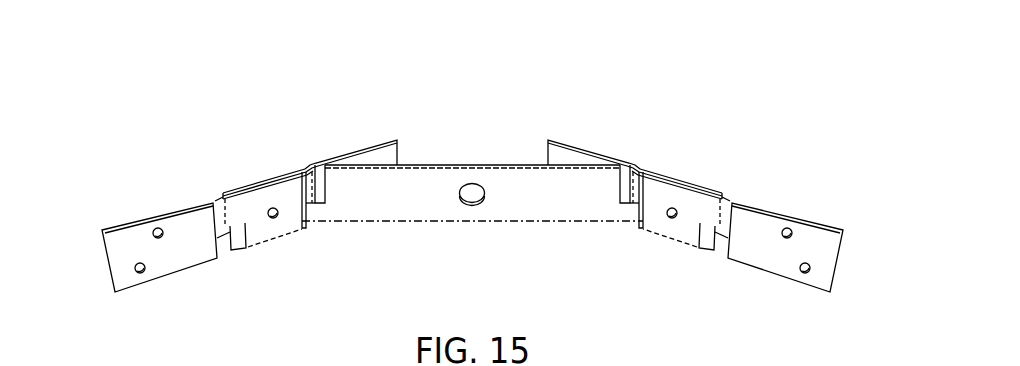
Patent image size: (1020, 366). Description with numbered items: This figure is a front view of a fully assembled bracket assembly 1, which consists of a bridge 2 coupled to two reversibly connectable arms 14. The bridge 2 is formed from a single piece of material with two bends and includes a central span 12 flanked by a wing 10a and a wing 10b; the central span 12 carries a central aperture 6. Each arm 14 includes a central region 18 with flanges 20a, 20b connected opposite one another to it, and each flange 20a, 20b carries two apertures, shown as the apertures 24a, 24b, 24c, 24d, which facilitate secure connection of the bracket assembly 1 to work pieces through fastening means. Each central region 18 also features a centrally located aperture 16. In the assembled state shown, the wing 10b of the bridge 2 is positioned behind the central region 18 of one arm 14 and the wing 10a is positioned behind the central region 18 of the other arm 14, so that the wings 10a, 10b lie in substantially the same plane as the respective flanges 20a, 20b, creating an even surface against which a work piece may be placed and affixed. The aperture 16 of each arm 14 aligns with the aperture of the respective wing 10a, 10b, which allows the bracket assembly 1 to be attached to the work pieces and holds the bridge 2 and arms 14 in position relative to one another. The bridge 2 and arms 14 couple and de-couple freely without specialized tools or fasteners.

The bracket assembly 1 is at (518, 50).
The bridge 2 is at (472, 197).
The central aperture 6 is at (473, 195).
The wing 10a is at (703, 182).
The wing 10b is at (245, 183).
The central span 12 is at (392, 213).
The arm 14 is at (117, 215).
The aperture 16 is at (273, 219).
The central region 18 is at (287, 187).
The flange 20a is at (373, 155).
The flange 20b is at (117, 259).
The flange aperture 24a is at (803, 272).
The flange aperture 24b is at (784, 230).
The flange aperture 24c is at (162, 231).
The flange aperture 24d is at (145, 272).